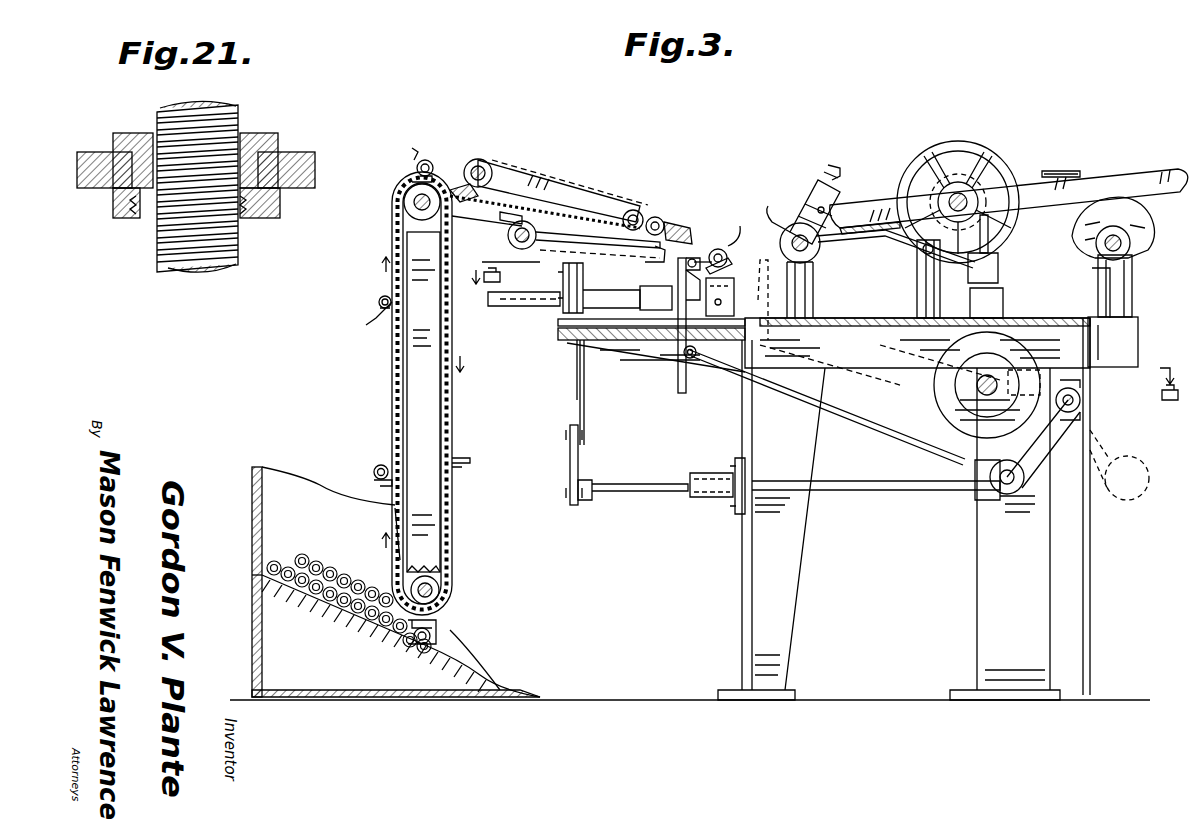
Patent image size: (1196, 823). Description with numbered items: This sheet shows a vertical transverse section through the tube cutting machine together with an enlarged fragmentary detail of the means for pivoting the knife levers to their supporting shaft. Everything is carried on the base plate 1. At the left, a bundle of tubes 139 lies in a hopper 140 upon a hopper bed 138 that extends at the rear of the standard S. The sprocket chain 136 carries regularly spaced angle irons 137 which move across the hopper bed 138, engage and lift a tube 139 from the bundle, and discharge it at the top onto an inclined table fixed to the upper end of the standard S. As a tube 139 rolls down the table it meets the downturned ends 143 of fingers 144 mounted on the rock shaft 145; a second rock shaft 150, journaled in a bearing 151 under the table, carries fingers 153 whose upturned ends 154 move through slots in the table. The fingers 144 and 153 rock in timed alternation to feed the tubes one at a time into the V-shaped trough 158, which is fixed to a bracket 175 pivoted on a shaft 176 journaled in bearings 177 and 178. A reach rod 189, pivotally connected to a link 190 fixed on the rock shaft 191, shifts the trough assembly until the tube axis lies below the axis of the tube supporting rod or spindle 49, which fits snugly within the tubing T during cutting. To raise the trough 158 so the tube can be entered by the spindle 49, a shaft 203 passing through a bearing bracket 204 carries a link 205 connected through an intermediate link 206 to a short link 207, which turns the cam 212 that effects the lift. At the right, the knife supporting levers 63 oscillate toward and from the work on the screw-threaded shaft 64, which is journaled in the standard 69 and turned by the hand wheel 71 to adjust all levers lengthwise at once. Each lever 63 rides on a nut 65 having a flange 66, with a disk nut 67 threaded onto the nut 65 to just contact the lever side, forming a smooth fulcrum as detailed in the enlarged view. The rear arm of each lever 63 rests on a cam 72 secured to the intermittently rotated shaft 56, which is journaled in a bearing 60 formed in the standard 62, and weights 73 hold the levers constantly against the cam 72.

In FIG. 3, the base plate 1 is at (1138, 332).
In FIG. 3, the spindle 49 is at (812, 252).
In FIG. 3, the shaft 56 is at (1094, 264).
In FIG. 3, the bearing 60 is at (1130, 258).
In FIG. 3, the standard 62 is at (1132, 288).
In FIG. 21, the knife supporting lever 63 is at (320, 150).
In FIG. 3, the knife supporting lever 63 is at (1038, 168).
In FIG. 21, the screw-threaded shaft 64 is at (190, 100).
In FIG. 3, the screw-threaded shaft 64 is at (938, 184).
In FIG. 21, the nut 65 is at (242, 212).
In FIG. 21, the flange 66 is at (280, 132).
In FIG. 21, the disk nut 67 is at (281, 205).
In FIG. 3, the standard 69 is at (988, 240).
In FIG. 3, the hand wheel 71 is at (936, 146).
In FIG. 3, the cam 72 is at (1150, 222).
In FIG. 3, the weight 73 is at (1080, 170).
In FIG. 3, the sprocket chain 136 is at (454, 393).
In FIG. 3, the angle iron 137 is at (418, 150).
In FIG. 3, the hopper bed 138 is at (332, 620).
In FIG. 3, the tube 139 is at (364, 585).
In FIG. 3, the hopper 140 is at (256, 575).
In FIG. 3, the downturned end 143 is at (660, 217).
In FIG. 3, the finger 144 is at (602, 192).
In FIG. 3, the shaft 145 is at (490, 150).
In FIG. 3, the second rock shaft 150 is at (510, 244).
In FIG. 3, the bearing 151 is at (506, 216).
In FIG. 3, the finger 153 is at (596, 256).
In FIG. 3, the upturned end 154 is at (676, 222).
In FIG. 3, the V-shaped trough 158 is at (732, 266).
In FIG. 3, the bracket 175 is at (714, 244).
In FIG. 3, the shaft 176 is at (678, 266).
In FIG. 3, the bearing 177 is at (558, 330).
In FIG. 3, the bearing 178 is at (575, 355).
In FIG. 3, the reach rod 189 is at (902, 420).
In FIG. 3, the link 190 is at (1080, 432).
In FIG. 3, the shaft 191 is at (1082, 382).
In FIG. 3, the shaft 203 is at (870, 472).
In FIG. 3, the bearing bracket 204 is at (710, 476).
In FIG. 3, the link 205 is at (568, 464).
In FIG. 3, the intermediate link 206 is at (584, 392).
In FIG. 3, the short link 207 is at (562, 278).
In FIG. 3, the cam 212 is at (734, 294).
In FIG. 3, the standard S is at (442, 513).
In FIG. 3, the tubing T is at (737, 225).